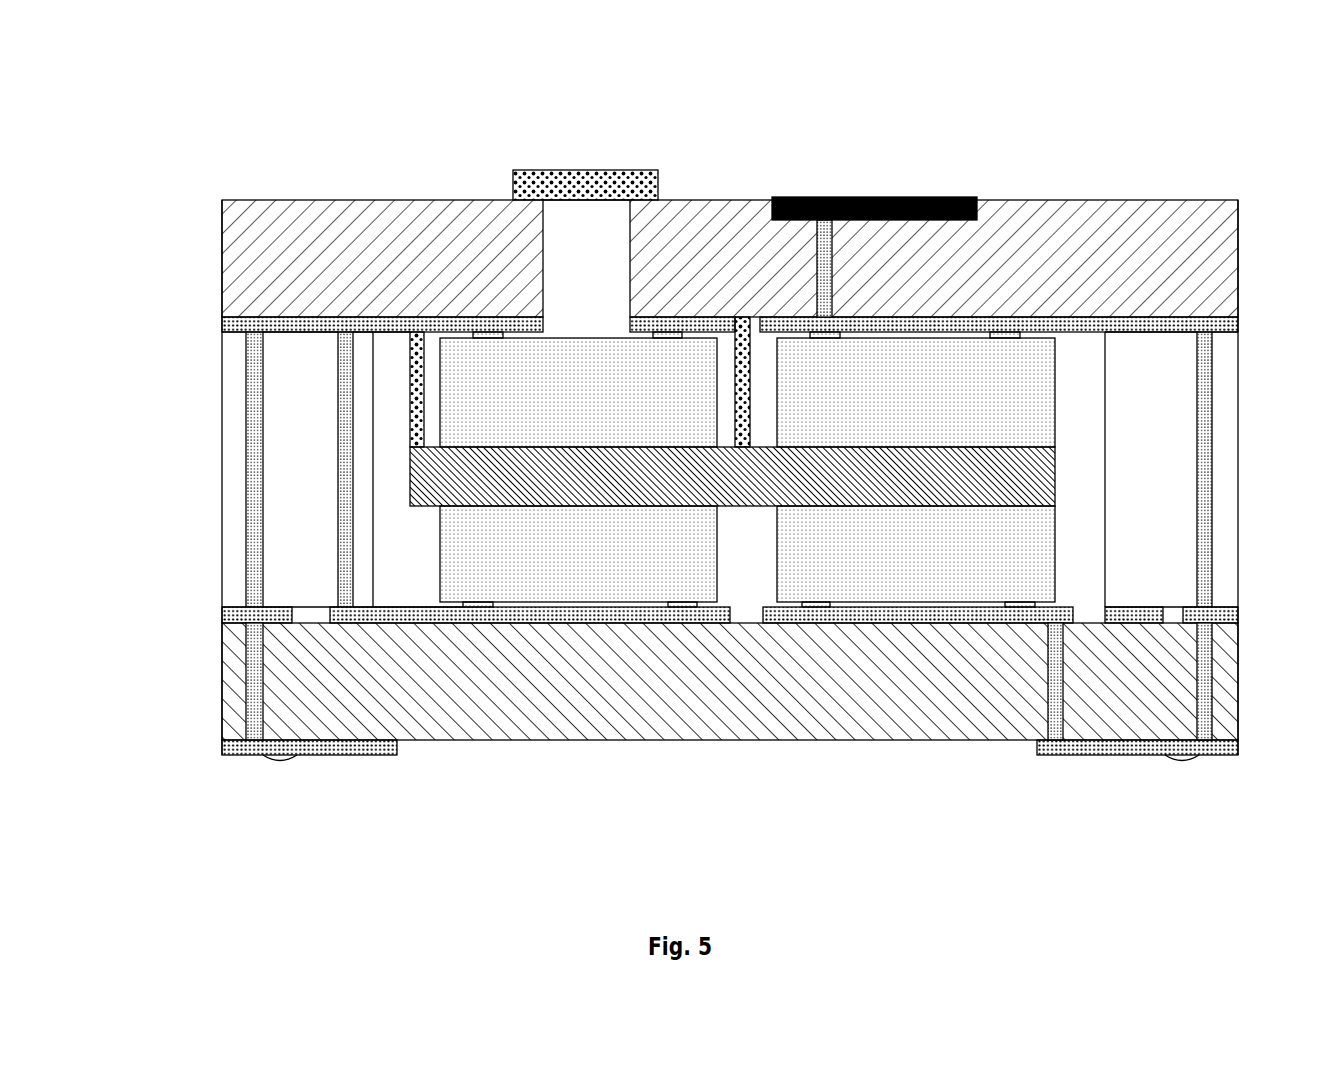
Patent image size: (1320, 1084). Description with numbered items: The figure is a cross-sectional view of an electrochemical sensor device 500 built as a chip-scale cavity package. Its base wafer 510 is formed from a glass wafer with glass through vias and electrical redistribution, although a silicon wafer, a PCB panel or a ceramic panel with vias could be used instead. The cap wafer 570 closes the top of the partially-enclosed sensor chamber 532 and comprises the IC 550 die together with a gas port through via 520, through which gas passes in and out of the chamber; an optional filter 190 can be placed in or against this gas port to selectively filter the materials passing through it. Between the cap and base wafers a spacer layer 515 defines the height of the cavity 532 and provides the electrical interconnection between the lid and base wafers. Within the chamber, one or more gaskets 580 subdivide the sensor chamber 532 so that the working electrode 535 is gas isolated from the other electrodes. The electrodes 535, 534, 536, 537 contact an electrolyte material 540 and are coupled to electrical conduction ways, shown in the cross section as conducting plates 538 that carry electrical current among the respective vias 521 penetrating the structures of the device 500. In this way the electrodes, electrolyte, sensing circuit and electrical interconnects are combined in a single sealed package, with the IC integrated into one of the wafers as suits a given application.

The electrochemical sensor device 500 is at (220, 78).
The base wafer 510 is at (218, 669).
The spacer layer 515 is at (218, 455).
The gas port through via 520 is at (587, 222).
The vias 521 is at (1218, 493).
The sensor chamber 532 is at (1096, 389).
The electrode 534 is at (589, 558).
The working electrode 535 is at (587, 409).
The electrode 536 is at (932, 558).
The electrode 537 is at (932, 409).
The conducting plates 538 is at (312, 312).
The electrolyte material 540 is at (760, 490).
The IC 550 is at (880, 182).
The cap wafer 570 is at (218, 289).
The gaskets 580 is at (404, 401).
The filter 190 is at (650, 165).